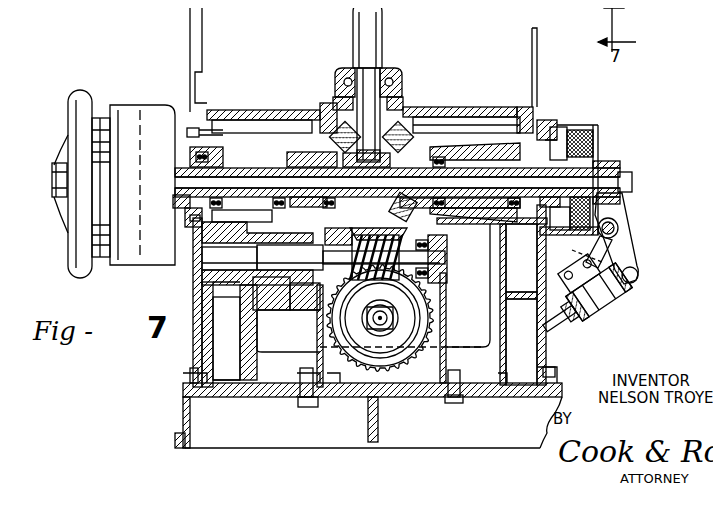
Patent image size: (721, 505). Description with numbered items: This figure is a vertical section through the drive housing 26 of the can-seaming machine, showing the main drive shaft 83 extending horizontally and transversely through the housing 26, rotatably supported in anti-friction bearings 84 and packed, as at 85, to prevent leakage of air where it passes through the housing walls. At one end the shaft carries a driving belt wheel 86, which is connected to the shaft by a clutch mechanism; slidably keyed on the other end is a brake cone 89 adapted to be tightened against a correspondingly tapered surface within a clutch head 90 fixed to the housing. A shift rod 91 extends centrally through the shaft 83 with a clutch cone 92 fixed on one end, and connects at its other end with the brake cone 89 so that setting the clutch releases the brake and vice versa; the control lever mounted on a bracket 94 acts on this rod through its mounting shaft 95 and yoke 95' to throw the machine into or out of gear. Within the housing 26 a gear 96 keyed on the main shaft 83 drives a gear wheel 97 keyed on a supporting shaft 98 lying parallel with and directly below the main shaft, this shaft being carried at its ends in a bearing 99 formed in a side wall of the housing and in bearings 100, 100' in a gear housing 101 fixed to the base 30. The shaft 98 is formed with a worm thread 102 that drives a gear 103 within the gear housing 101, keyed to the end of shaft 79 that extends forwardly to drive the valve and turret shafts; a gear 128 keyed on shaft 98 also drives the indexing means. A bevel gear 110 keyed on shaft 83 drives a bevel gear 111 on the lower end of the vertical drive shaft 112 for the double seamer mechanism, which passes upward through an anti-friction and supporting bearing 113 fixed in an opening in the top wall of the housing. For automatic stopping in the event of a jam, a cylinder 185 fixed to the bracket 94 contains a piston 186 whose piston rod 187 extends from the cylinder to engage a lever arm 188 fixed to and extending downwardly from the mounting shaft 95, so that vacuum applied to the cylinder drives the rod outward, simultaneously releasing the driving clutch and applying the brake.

The housing 26 is at (200, 360).
The base 30 is at (252, 397).
The shaft 79 is at (432, 314).
The main drive shaft 83 is at (352, 198).
The anti-friction bearings 84 is at (222, 150).
The packing 85 is at (195, 230).
The driving belt wheel 86 is at (128, 104).
The brake cone 89 is at (585, 150).
The clutch head 90 is at (582, 130).
The shift rod 91 is at (600, 180).
The clutch cone 92 is at (60, 170).
The bracket 94 is at (578, 250).
The mounting shaft 95 is at (637, 228).
The yoke 95' is at (636, 238).
The gear 96 is at (298, 152).
The gear wheel 97 is at (300, 310).
The supporting shaft 98 is at (266, 283).
The bearing 99 is at (193, 297).
The bearing 100 is at (336, 224).
The bearing 100' is at (416, 261).
The gear housing 101 is at (400, 318).
The worm thread 102 is at (438, 256).
The gear 103 is at (440, 347).
The bevel gear 110 is at (438, 146).
The bevel gear 111 is at (408, 152).
The drive shaft 112 is at (382, 24).
The anti-friction and supporting bearing 113 is at (392, 72).
The gear 128 is at (246, 320).
The cylinder 185 is at (617, 318).
The piston 186 is at (598, 322).
The piston rod 187 is at (624, 300).
The lever arm 188 is at (638, 268).